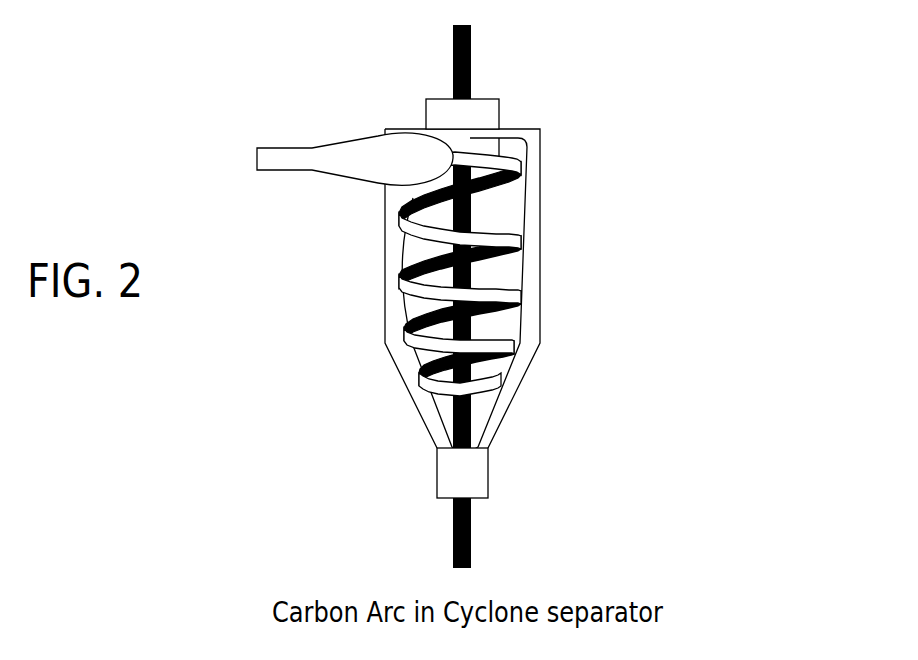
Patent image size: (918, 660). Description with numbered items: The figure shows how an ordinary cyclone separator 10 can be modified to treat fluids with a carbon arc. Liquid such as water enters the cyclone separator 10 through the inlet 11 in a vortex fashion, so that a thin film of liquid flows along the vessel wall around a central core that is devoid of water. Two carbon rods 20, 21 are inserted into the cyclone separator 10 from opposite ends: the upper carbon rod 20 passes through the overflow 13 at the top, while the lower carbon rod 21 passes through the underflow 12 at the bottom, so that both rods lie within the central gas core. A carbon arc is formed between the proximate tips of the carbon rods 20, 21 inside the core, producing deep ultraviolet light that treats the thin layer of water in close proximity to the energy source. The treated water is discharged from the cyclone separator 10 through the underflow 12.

The cyclone separator 10 is at (540, 270).
The inlet 11 is at (257, 156).
The underflow 12 is at (488, 467).
The overflow 13 is at (499, 110).
The carbon rod 20 is at (471, 52).
The carbon rod 21 is at (471, 540).